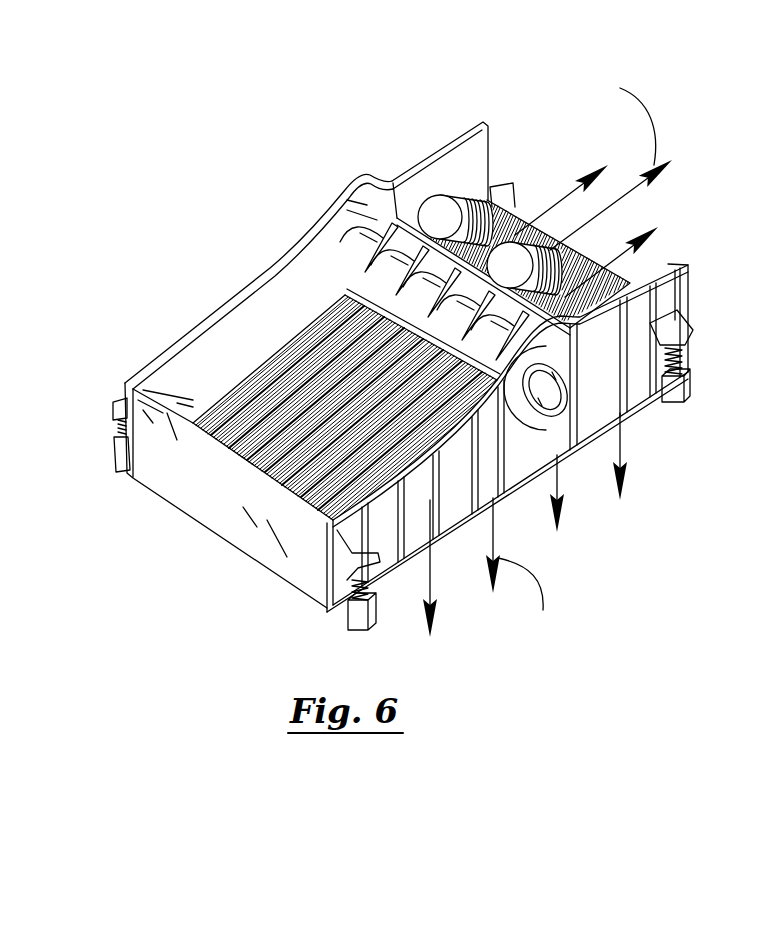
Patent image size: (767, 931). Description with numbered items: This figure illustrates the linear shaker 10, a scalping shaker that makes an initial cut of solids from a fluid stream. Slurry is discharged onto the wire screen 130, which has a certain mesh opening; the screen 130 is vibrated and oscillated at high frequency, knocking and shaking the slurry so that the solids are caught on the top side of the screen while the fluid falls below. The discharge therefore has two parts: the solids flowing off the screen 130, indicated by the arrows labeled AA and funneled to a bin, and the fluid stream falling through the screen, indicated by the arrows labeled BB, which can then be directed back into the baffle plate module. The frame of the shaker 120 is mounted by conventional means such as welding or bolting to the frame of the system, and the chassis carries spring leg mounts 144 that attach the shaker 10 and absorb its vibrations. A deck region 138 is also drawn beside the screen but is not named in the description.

The linear shaker 10 is at (300, 145).
The frame of the shaker 120 is at (440, 153).
The wire screen 130 is at (283, 358).
The ledge / deck plate 138 is at (213, 377).
The spring leg mounts 144 is at (368, 595).